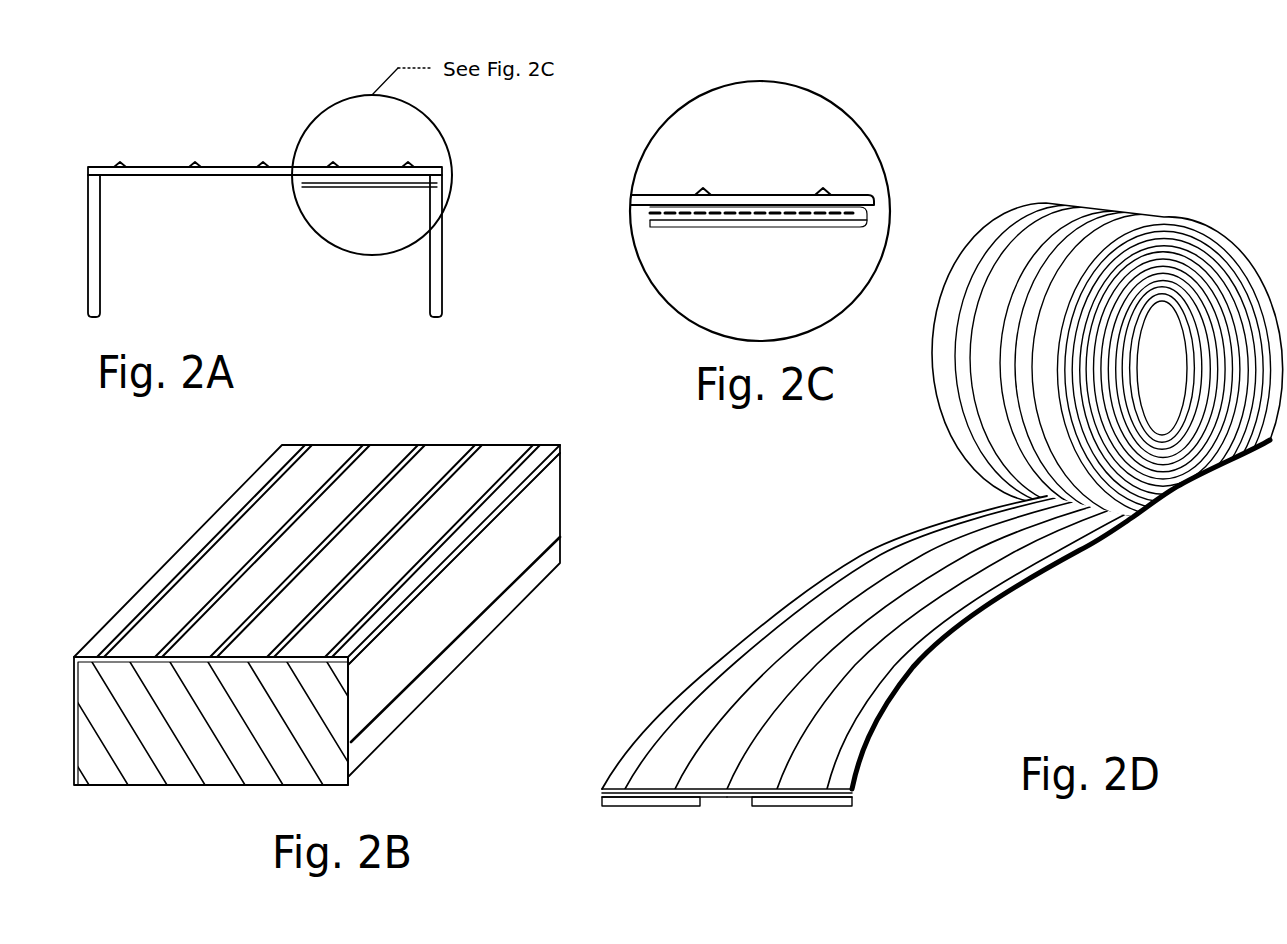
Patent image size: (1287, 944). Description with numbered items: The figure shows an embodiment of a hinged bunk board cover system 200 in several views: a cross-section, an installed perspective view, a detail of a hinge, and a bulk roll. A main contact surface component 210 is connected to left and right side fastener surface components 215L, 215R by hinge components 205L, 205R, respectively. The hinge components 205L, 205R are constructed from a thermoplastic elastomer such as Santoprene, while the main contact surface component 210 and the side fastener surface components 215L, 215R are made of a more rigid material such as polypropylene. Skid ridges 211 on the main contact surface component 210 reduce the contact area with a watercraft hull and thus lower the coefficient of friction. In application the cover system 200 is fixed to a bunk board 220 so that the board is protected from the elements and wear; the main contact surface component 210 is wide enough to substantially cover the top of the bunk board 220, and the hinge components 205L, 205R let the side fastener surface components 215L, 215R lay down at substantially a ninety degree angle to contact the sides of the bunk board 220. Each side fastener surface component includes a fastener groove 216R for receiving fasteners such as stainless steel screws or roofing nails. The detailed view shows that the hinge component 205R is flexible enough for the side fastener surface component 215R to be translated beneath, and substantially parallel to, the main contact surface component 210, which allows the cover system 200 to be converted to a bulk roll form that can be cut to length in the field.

In FIG. 2D, the hinged bunk board cover system 200 is at (1065, 64).
In FIG. 2A, the main contact surface component 210 is at (157, 165).
In FIG. 2C, the main contact surface component 210 is at (765, 194).
In FIG. 2B, the main contact surface component 210 is at (385, 450).
In FIG. 2D, the main contact surface component 210 is at (766, 694).
In FIG. 2A, the skid ridges 211 is at (263, 162).
In FIG. 2C, the skid ridges 211 is at (701, 193).
In FIG. 2B, the skid ridges 211 is at (531, 446).
In FIG. 2D, the left hinge component 205L is at (605, 806).
In FIG. 2C, the right hinge component 205R is at (862, 229).
In FIG. 2B, the right hinge component 205R is at (560, 452).
In FIG. 2D, the right hinge component 205R is at (850, 803).
In FIG. 2A, the left side fastener surface component 215L is at (100, 225).
In FIG. 2D, the left side fastener surface component 215L is at (656, 808).
In FIG. 2A, the right side fastener surface component 215R is at (442, 255).
In FIG. 2C, the right side fastener surface component 215R is at (757, 229).
In FIG. 2B, the right side fastener surface component 215R is at (548, 510).
In FIG. 2D, the right side fastener surface component 215R is at (795, 806).
In FIG. 2B, the fastener groove 216R is at (558, 535).
In FIG. 2B, the bunk board 220 is at (220, 771).